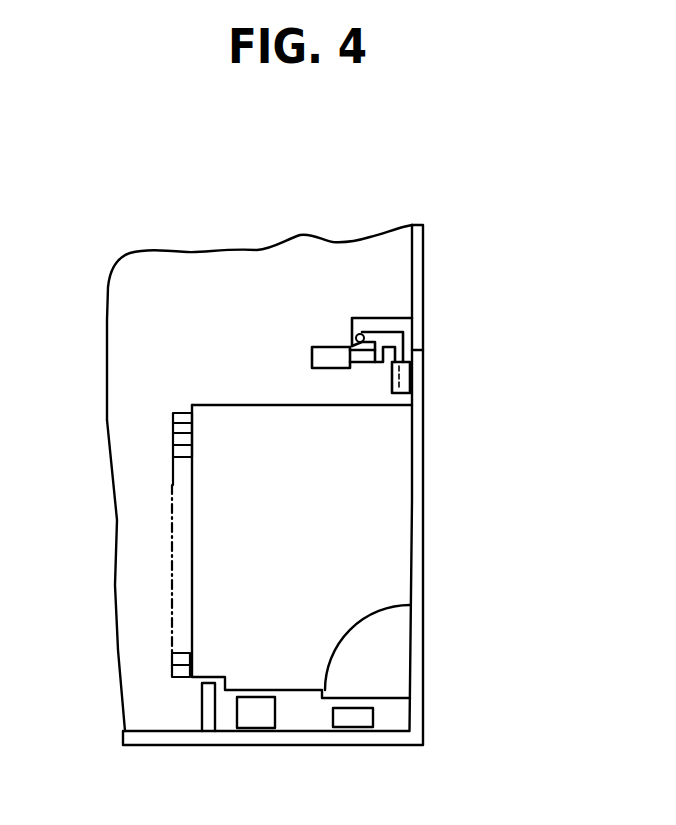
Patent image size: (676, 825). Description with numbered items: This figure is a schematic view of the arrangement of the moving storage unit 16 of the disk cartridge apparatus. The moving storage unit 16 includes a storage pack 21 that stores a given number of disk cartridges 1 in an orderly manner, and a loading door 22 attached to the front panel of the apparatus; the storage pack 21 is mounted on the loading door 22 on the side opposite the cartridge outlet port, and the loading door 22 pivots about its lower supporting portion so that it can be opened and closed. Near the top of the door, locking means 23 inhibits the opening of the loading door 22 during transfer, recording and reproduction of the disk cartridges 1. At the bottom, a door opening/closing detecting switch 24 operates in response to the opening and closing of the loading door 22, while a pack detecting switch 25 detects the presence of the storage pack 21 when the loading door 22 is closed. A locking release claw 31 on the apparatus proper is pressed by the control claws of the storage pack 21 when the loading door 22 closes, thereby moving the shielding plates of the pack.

The disk cartridge 1 is at (173, 421).
The moving storage unit 16 is at (165, 573).
The storage pack 21 is at (390, 513).
The loading door 22 is at (423, 557).
The locking means 23 is at (395, 312).
The door opening/closing detecting switch 24 is at (357, 727).
The pack detecting switch 25 is at (260, 728).
The locking release claw 31 is at (217, 718).